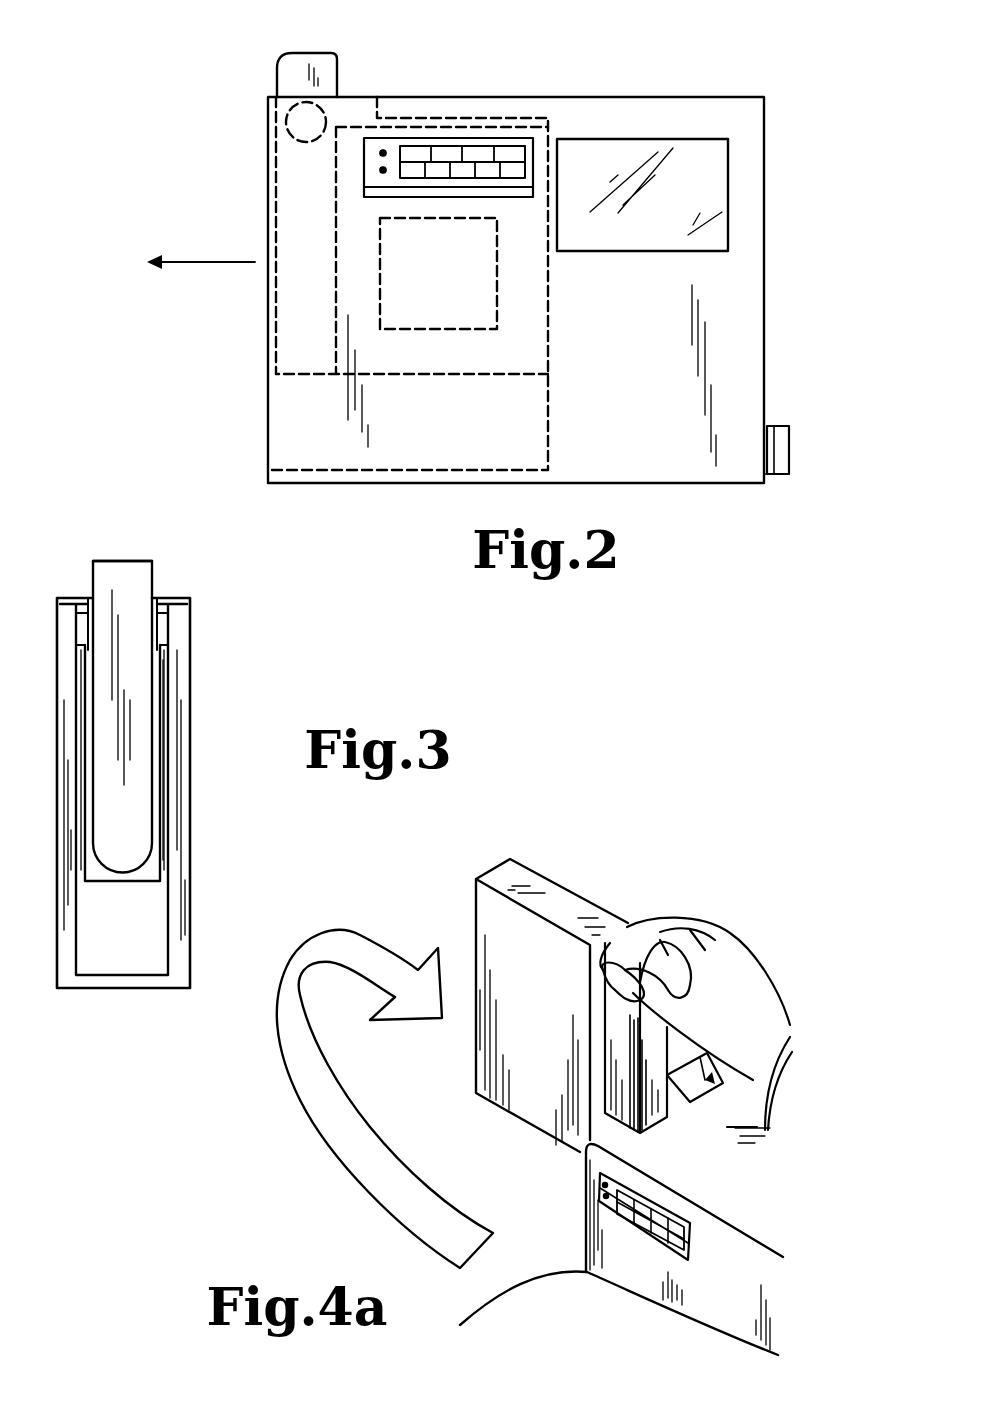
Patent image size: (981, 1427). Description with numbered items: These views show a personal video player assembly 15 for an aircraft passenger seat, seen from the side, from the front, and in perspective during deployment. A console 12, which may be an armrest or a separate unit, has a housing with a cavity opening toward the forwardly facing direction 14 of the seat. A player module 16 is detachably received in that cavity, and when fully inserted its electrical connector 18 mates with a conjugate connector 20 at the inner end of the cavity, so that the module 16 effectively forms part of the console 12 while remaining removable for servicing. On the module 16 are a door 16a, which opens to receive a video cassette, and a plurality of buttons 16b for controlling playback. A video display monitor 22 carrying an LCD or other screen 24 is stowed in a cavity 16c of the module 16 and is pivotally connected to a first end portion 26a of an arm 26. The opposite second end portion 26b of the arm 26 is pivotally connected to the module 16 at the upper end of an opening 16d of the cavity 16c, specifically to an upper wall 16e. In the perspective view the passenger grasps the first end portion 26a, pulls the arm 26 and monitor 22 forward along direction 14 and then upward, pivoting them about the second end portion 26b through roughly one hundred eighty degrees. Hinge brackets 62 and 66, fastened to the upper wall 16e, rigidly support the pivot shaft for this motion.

In FIG. 4A, the console 12 is at (738, 1192).
In FIG. 2, the forwardly facing direction 14 is at (207, 262).
In FIG. 2, the personal video player assembly 15 is at (581, 75).
In FIG. 3, the personal video player assembly 15 is at (294, 678).
In FIG. 4A, the personal video player assembly 15 is at (814, 1150).
In FIG. 2, the player module 16 is at (670, 97).
In FIG. 3, the player module 16 is at (192, 655).
In FIG. 4A, the player module 16 is at (727, 1263).
In FIG. 2, the door 16a is at (728, 192).
In FIG. 2, the buttons 16b is at (436, 138).
In FIG. 4A, the buttons 16b is at (598, 1185).
In FIG. 2, the cavity 16c is at (548, 425).
In FIG. 3, the cavity 16c is at (162, 686).
In FIG. 3, the opening 16d is at (165, 777).
In FIG. 3, the upper wall 16e is at (182, 600).
In FIG. 2, the electrical connector 18 is at (771, 476).
In FIG. 2, the conjugate connector 20 is at (789, 443).
In FIG. 2, the video display monitor 22 is at (436, 375).
In FIG. 4A, the video display monitor 22 is at (541, 878).
In FIG. 2, the screen 24 is at (497, 286).
In FIG. 2, the arm 26 is at (308, 53).
In FIG. 3, the arm 26 is at (124, 561).
In FIG. 4A, the arm 26 is at (660, 1120).
In FIG. 2, the first end portion 26a is at (266, 358).
In FIG. 3, the first end portion 26a is at (170, 848).
In FIG. 4A, the first end portion 26a is at (648, 900).
In FIG. 2, the second end portion 26b is at (262, 84).
In FIG. 3, the second end portion 26b is at (166, 548).
In FIG. 3, the hinge bracket 62 is at (178, 598).
In FIG. 3, the hinge bracket 66 is at (72, 598).